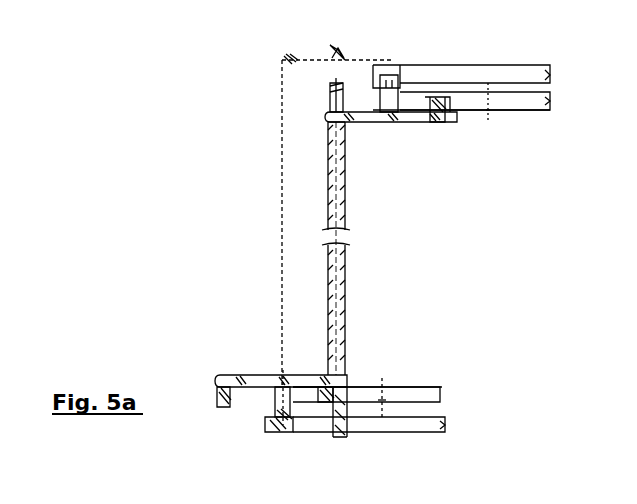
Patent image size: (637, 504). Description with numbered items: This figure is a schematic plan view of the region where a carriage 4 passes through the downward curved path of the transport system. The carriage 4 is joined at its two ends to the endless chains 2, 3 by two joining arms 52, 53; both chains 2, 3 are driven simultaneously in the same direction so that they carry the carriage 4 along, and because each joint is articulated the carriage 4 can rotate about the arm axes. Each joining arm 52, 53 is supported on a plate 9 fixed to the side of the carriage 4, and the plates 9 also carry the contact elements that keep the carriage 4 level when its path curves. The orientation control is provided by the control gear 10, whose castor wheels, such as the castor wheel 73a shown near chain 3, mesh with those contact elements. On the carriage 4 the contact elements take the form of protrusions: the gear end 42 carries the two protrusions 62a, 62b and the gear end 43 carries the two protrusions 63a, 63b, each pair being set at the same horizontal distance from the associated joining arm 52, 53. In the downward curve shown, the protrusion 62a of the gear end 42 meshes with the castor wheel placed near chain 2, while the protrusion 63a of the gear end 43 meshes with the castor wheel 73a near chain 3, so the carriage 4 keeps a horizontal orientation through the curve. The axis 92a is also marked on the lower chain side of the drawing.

The endless chain 2 is at (375, 434).
The endless chain 3 is at (462, 60).
The carriage 4 is at (346, 282).
The plate 9 is at (416, 124).
The control gear 10 is at (496, 120).
The gear end 42 is at (352, 370).
The gear end 43 is at (345, 127).
The joining arm 52 is at (272, 413).
The joining arm 53 is at (398, 82).
The protrusion 62a is at (345, 438).
The protrusion 62b is at (218, 406).
The protrusion 63a is at (450, 97).
The protrusion 63b is at (330, 92).
The castor wheel 73a is at (512, 110).
The bore axis 92a is at (416, 390).